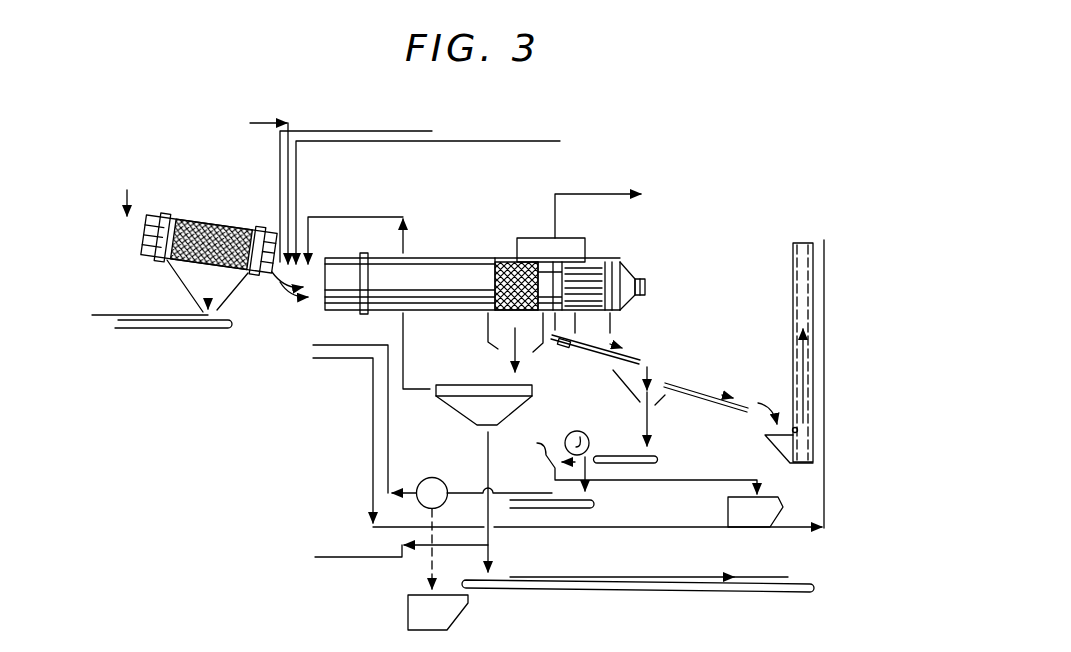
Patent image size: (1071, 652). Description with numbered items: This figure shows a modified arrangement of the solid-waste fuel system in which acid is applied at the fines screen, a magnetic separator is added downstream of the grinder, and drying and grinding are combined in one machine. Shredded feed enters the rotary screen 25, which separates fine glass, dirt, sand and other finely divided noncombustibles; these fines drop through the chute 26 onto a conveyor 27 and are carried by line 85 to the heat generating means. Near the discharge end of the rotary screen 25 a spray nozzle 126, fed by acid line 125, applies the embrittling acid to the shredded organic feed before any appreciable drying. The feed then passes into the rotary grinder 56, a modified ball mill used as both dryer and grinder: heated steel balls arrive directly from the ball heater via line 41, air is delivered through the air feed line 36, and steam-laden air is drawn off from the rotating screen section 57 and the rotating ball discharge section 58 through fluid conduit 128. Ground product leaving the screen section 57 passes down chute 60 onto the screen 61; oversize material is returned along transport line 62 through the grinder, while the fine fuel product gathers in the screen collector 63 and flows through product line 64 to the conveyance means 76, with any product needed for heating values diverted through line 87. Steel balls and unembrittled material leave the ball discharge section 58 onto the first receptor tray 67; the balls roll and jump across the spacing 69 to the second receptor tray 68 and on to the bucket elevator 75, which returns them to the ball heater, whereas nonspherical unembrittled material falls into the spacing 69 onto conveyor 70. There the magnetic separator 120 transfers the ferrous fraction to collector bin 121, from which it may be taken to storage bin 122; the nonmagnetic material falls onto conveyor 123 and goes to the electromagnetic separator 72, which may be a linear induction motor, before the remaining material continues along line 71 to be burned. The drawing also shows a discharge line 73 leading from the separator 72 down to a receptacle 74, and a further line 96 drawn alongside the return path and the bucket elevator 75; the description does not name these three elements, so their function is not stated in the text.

The rotary screen 25 is at (192, 216).
The chute 26 is at (183, 283).
The conveyor 27 is at (157, 329).
The air feed line 36 is at (283, 122).
The acid feed line 41 is at (350, 143).
The rotary grinder 56 is at (448, 259).
The rotating screen section 57 is at (503, 257).
The rotating ball discharge section 58 is at (597, 261).
The chute 60 is at (488, 333).
The screen 61 is at (533, 390).
The transport line 62 is at (407, 239).
The screen collector 63 is at (502, 403).
The product line 64 is at (490, 468).
The first receptor tray 67 is at (597, 353).
The second receptor tray 68 is at (720, 405).
The spacing 69 is at (670, 372).
The conveyor 70 is at (654, 454).
The line 71 is at (391, 425).
The nonferrous separating means 72 is at (447, 462).
The drain line 73 is at (430, 513).
The collection tank 74 is at (442, 623).
The bucket elevator 75 is at (805, 363).
The conveyance means 76 is at (586, 592).
The line 85 is at (102, 314).
The line 87 is at (340, 553).
The recycle line 96 is at (826, 430).
The magnetic separator 120 is at (577, 431).
The collector bin 121 is at (537, 442).
The storage bin 122 is at (728, 507).
The conveyor 123 is at (573, 510).
The acid line 125 is at (383, 130).
The spray nozzle 126 is at (270, 223).
The fluid conduit 128 is at (602, 194).